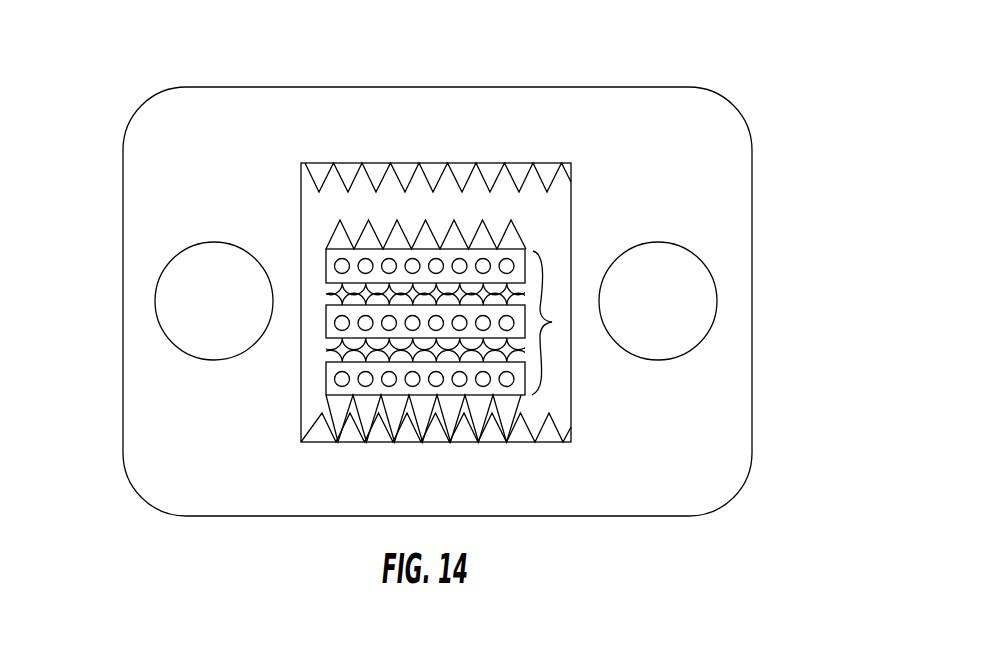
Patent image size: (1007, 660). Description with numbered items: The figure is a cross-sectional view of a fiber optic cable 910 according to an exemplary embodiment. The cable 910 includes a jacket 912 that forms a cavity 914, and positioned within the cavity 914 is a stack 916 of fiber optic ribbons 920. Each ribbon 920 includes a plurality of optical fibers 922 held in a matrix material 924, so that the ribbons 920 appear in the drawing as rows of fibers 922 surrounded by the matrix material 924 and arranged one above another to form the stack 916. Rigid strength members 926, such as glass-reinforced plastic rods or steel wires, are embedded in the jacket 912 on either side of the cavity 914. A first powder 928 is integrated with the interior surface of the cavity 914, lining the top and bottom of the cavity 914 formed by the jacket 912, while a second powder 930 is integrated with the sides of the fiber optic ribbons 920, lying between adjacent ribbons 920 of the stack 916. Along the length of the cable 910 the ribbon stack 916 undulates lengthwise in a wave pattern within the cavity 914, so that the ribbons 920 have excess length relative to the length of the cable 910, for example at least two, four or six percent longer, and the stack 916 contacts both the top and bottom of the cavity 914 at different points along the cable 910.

The fiber optic cable 910 is at (448, 308).
The jacket 912 is at (703, 434).
The cavity 914 is at (572, 170).
The stack 916 is at (424, 308).
The fiber optic ribbons 920 is at (327, 328).
The optical fibers 922 is at (389, 315).
The matrix material 924 is at (330, 273).
The rigid strength members 926 is at (197, 314).
The first powder 928 is at (522, 170).
The second powder 930 is at (340, 288).